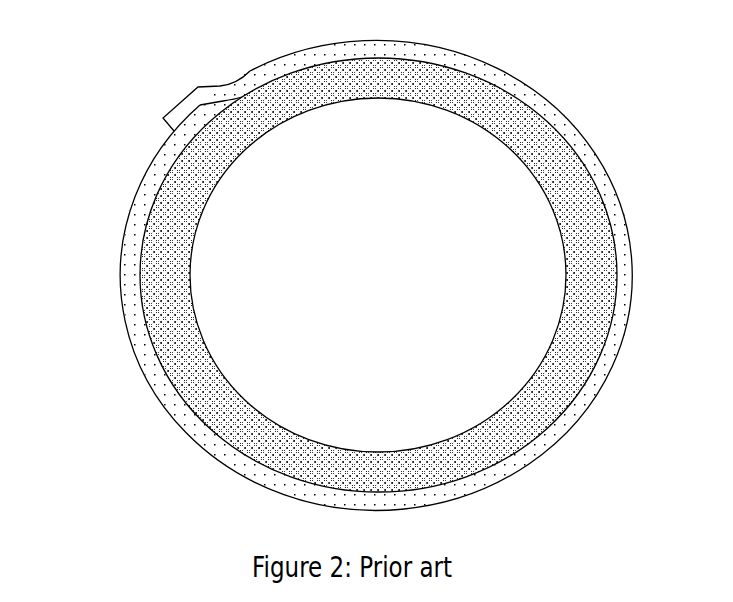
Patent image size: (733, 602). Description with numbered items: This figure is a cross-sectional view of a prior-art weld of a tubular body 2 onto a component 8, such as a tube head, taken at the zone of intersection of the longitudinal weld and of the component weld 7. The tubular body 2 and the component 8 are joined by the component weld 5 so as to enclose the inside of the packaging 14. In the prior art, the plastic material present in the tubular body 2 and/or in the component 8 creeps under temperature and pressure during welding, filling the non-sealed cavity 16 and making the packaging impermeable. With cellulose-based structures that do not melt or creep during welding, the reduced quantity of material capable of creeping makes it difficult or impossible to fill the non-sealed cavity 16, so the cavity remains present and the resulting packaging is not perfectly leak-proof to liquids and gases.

The tubular body 2 is at (132, 222).
The component weld 5 is at (610, 208).
The zone of intersection of the longitudinal weld and of the component weld 7 is at (145, 73).
The component 8 is at (592, 263).
The inside of the packaging 14 is at (378, 275).
The non-sealed cavity 16 is at (203, 105).